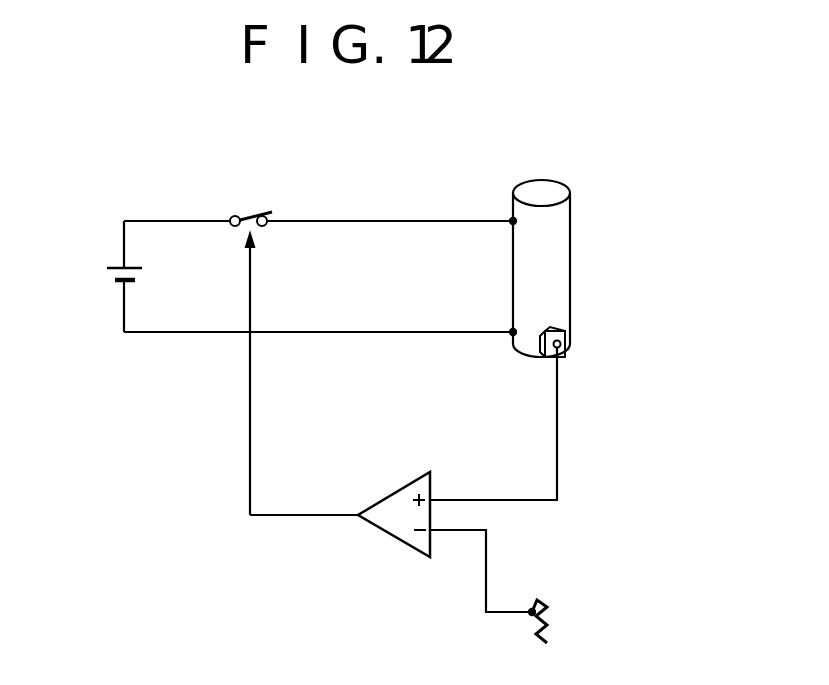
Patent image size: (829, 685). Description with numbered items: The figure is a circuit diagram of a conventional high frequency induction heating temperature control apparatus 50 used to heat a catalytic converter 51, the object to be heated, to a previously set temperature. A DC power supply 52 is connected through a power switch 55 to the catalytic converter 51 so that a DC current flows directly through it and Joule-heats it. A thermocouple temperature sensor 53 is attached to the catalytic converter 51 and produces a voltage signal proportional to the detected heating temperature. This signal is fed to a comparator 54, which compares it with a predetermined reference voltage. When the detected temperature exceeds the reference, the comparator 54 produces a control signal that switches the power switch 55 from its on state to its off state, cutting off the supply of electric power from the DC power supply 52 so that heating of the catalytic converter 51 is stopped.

The high frequency induction heating temperature control apparatus 50 is at (394, 203).
The catalytic converter 51 is at (550, 257).
The DC power supply 52 is at (112, 265).
The thermocouple temperature sensor 53 is at (565, 345).
The comparator 54 is at (392, 537).
The power switch 55 is at (251, 216).